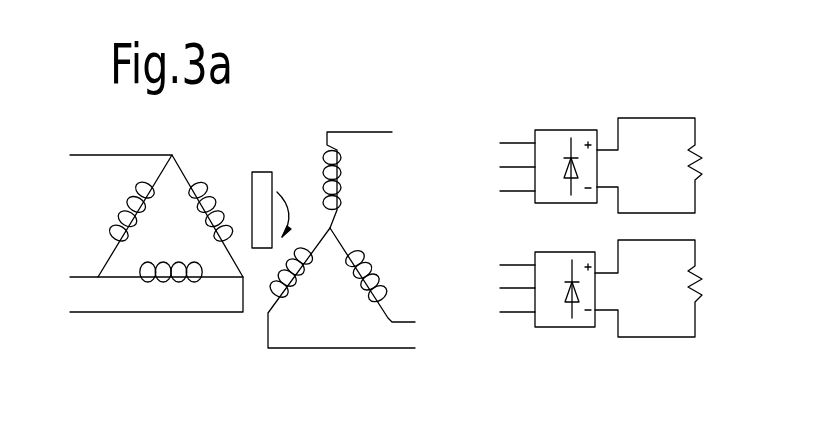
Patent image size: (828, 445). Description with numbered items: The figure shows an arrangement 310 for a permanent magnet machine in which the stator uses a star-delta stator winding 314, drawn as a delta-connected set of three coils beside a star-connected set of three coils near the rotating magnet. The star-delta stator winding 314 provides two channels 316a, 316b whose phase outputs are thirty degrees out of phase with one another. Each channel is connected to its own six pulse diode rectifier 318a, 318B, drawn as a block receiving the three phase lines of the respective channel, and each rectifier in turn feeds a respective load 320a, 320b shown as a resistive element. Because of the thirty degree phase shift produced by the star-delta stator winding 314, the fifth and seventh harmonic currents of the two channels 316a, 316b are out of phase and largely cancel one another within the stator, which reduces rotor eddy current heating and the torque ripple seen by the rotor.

The arrangement 310 is at (435, 65).
The star-delta stator winding 314 is at (177, 342).
The first channel 316a is at (522, 130).
The second channel 316b is at (538, 330).
The first six pulse diode rectifier 318a is at (594, 130).
The second six pulse diode rectifier 318B is at (578, 328).
The first load 320a is at (700, 146).
The second load 320b is at (697, 300).